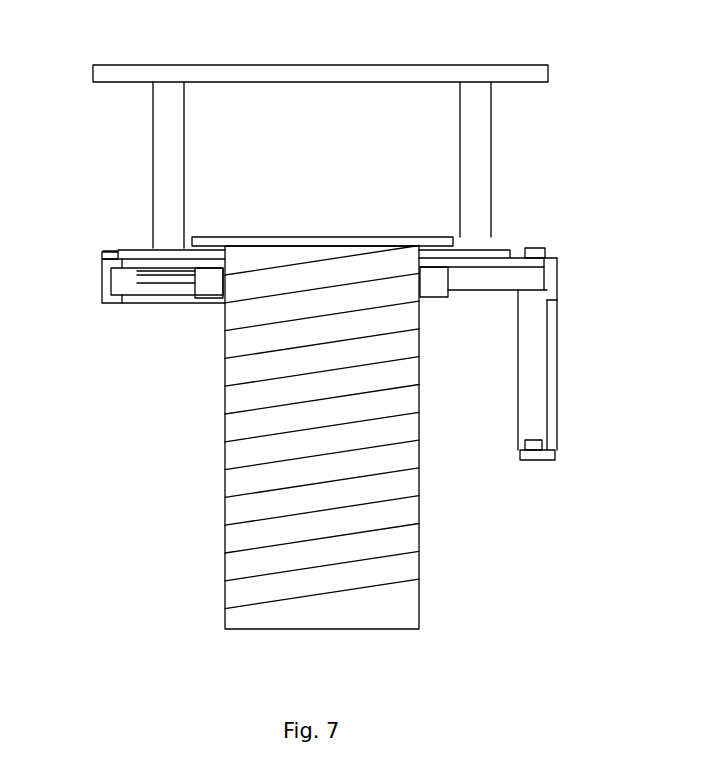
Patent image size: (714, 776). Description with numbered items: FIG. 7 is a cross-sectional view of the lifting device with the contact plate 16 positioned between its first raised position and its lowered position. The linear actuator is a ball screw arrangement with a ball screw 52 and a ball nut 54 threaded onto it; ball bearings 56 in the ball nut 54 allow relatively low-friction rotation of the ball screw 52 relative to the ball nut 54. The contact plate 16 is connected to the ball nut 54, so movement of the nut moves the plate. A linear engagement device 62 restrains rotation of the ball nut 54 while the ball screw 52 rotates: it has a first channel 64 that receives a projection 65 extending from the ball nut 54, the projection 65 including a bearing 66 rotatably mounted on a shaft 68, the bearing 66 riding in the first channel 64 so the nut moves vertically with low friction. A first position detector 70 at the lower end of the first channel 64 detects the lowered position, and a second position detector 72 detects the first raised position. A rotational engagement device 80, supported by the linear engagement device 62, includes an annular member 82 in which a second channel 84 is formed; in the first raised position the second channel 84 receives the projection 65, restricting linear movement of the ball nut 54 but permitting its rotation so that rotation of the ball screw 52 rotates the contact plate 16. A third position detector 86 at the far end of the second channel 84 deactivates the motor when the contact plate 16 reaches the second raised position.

The contact plate 16 is at (333, 63).
The ball screw 52 is at (423, 603).
The ball nut 54 is at (135, 265).
The ball bearings 56 is at (258, 236).
The linear engagement device 62 is at (580, 343).
The first channel 64 is at (530, 373).
The projection 65 is at (461, 320).
The bearing 66 is at (100, 278).
The shaft 68 is at (170, 280).
The first position detector 70 is at (540, 462).
The second position detector 72 is at (546, 248).
The rotational engagement device 80 is at (80, 304).
The annular member 82 is at (100, 270).
The second channel 84 is at (512, 282).
The third position detector 86 is at (115, 248).